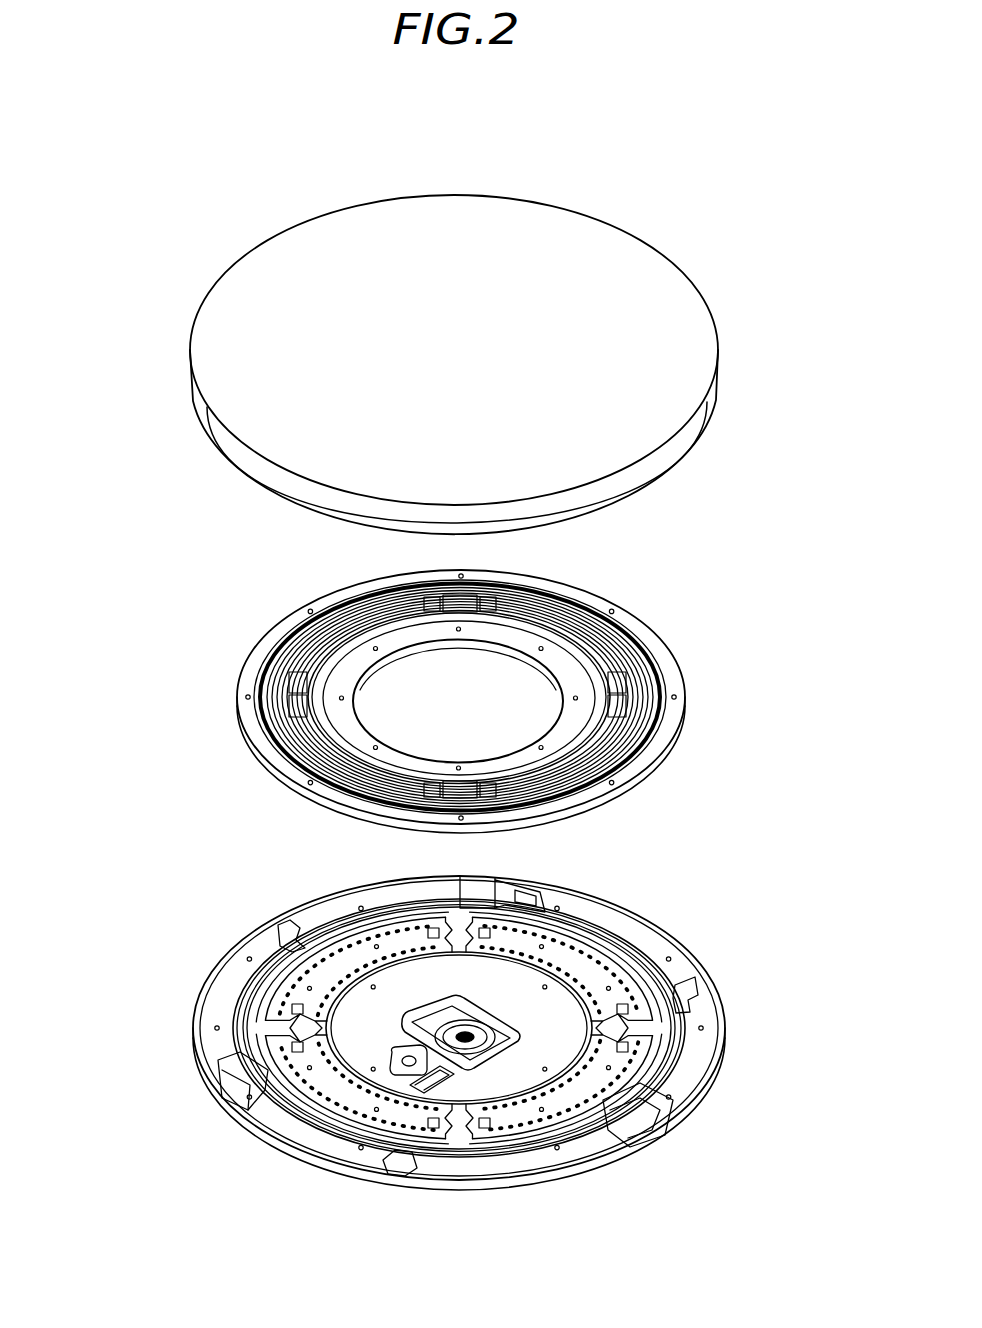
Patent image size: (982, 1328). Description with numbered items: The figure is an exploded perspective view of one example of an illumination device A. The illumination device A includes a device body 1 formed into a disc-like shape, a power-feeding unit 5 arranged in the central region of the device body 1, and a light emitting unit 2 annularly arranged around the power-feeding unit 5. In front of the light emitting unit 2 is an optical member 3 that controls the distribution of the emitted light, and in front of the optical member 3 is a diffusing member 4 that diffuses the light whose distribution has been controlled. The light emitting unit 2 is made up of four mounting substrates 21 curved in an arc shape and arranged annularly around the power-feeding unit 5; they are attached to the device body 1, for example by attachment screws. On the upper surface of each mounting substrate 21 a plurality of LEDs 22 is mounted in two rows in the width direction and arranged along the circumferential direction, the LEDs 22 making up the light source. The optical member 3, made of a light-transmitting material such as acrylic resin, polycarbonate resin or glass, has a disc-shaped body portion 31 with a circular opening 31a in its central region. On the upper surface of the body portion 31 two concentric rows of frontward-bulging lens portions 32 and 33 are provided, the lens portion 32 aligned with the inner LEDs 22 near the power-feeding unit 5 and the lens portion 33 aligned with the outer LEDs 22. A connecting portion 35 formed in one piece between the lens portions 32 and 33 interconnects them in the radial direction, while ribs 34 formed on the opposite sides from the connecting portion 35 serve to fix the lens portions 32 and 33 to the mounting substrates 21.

The illumination device A is at (192, 648).
The device body 1 is at (471, 1041).
The light emitting unit 2 is at (633, 1067).
The mounting substrate 21 is at (587, 946).
The LED 22 is at (355, 945).
The optical member 3 is at (465, 682).
The body portion 31 is at (662, 667).
The circular opening 31a is at (413, 675).
The lens portion 32 is at (308, 670).
The lens portion 33 is at (310, 718).
The rib 34 is at (552, 640).
The connecting portion 35 is at (312, 743).
The diffusing member 4 is at (610, 247).
The power-feeding unit 5 is at (445, 1030).